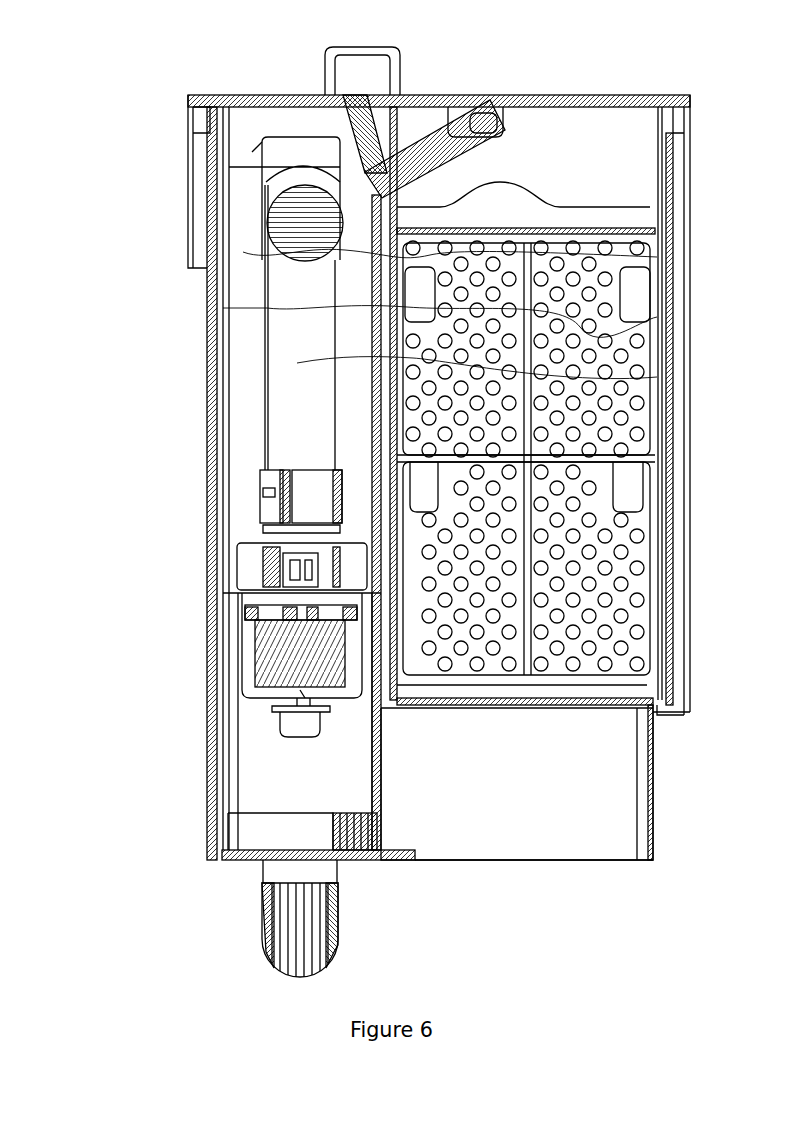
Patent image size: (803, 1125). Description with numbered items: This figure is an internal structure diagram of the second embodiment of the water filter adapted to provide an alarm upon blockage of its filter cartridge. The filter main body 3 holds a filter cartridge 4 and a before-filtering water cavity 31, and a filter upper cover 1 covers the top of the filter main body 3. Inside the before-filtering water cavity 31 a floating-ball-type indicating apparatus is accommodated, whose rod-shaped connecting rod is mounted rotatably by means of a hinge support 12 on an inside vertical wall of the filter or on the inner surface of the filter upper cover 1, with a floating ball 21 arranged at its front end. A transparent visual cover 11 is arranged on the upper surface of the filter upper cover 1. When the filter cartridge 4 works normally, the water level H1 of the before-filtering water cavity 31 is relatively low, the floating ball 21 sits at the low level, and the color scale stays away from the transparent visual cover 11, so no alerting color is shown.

The filter upper cover 1 is at (197, 117).
The transparent visual cover 11 is at (352, 73).
The hinge support 12 is at (378, 188).
The water level of the before-filtering water cavity when the filter cartridge is no H1 is at (190, 268).
The floating ball 21 is at (313, 233).
The filter main body 3 is at (207, 365).
The before-filtering water cavity 31 is at (266, 430).
The filter cartridge 4 is at (457, 567).